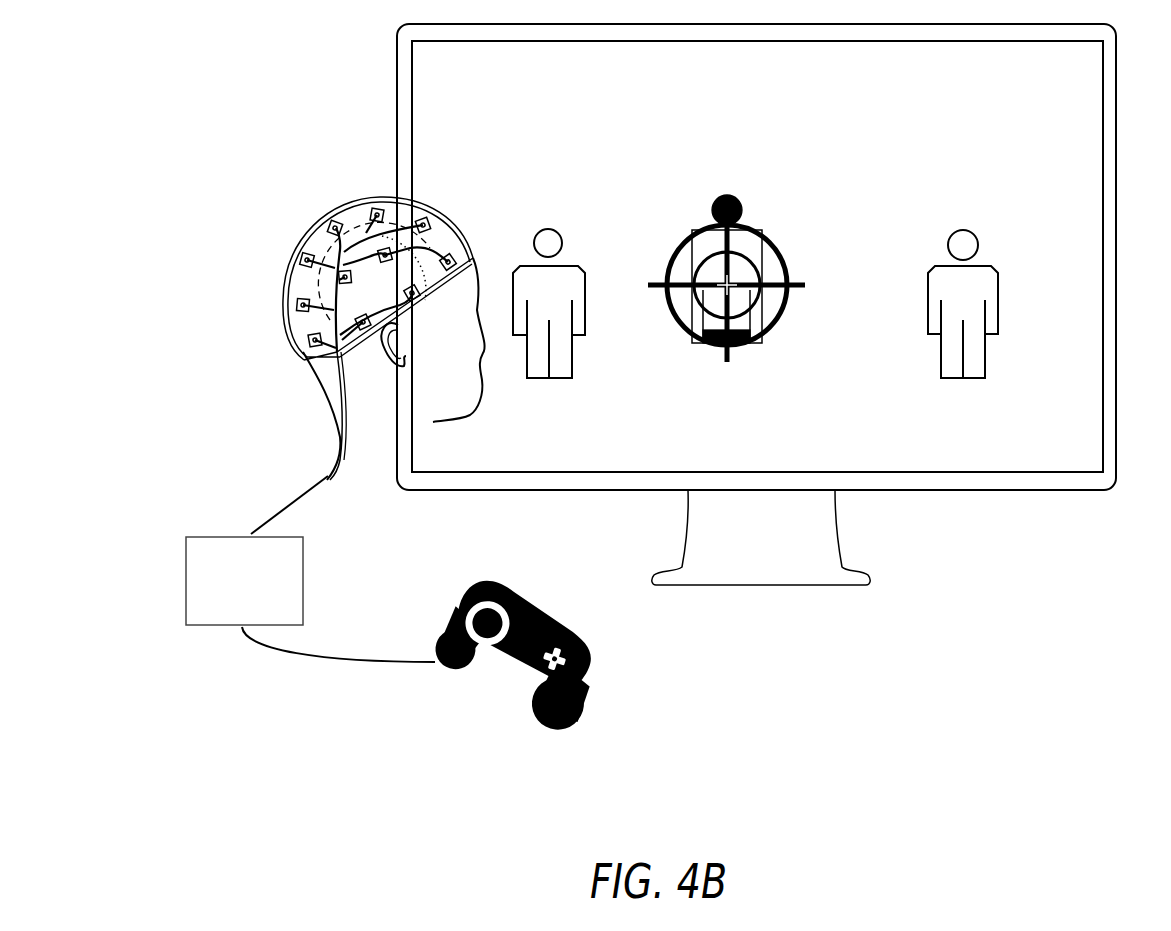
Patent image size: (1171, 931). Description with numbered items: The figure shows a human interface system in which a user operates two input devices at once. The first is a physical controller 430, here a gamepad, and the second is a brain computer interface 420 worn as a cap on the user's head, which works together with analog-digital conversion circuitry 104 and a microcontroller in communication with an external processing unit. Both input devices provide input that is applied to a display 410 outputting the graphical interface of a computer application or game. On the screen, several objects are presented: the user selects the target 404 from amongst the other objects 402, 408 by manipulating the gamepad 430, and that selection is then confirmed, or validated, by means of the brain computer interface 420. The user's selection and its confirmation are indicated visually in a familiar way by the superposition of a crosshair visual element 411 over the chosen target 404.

The analog-digital conversion circuitry 104 is at (303, 554).
The object 402 is at (573, 262).
The target 404 is at (752, 228).
The object 408 is at (985, 262).
The display 410 is at (1060, 490).
The crosshair visual element 411 is at (770, 324).
The brain computer interface 420 is at (349, 200).
The physical controller 430 is at (580, 710).